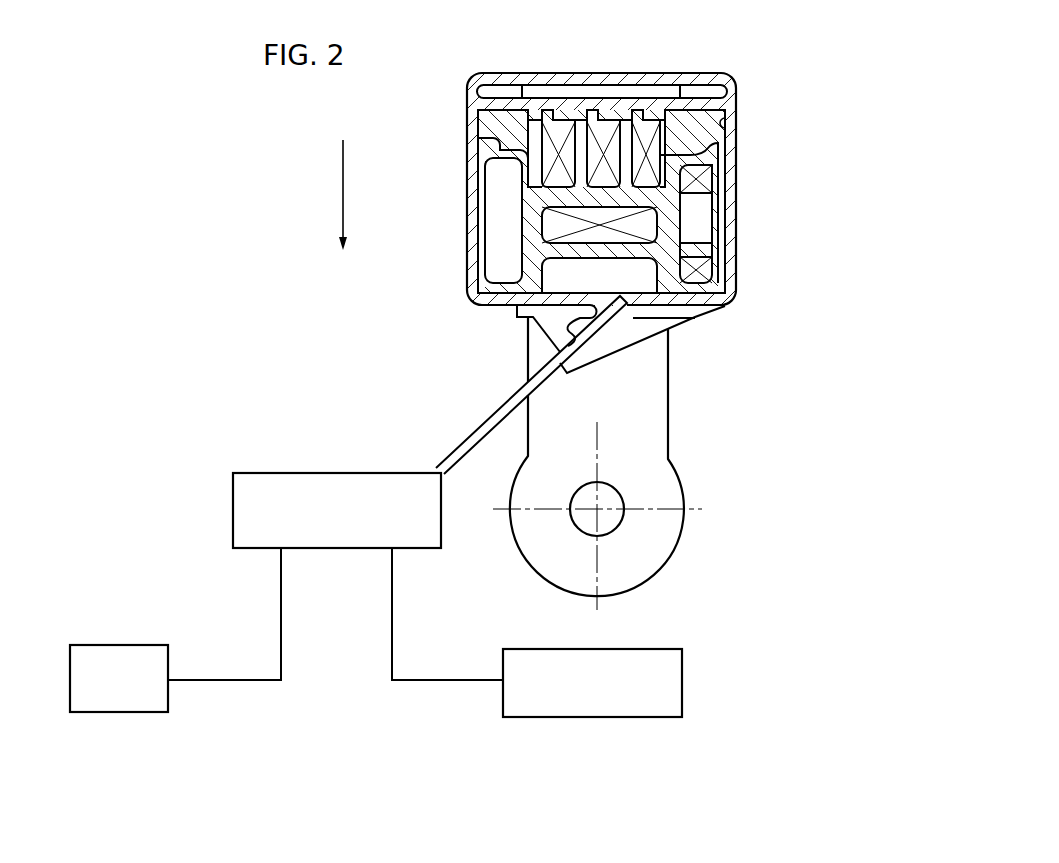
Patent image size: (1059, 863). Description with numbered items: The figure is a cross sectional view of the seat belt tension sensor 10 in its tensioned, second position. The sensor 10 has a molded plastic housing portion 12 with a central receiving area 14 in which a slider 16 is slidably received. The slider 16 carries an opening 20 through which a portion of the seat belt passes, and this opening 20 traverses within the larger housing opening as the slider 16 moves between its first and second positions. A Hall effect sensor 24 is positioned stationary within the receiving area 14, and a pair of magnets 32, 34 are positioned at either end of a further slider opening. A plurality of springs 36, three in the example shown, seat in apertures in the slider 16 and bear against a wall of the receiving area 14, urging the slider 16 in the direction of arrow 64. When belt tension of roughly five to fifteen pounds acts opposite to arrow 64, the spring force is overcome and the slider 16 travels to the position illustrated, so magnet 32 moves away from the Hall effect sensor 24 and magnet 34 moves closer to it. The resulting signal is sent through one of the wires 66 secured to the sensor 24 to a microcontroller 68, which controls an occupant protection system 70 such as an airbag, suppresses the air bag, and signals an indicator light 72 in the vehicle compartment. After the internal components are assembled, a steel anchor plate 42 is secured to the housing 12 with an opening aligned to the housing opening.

The seat belt tension sensor 10 is at (661, 46).
The housing portion 12 is at (738, 90).
The central receiving area 14 is at (725, 124).
The slider 16 is at (480, 158).
The opening 20 is at (560, 230).
The sensor 24 is at (722, 263).
The magnet 32 is at (700, 179).
The magnet 34 is at (713, 281).
The springs 36 is at (645, 157).
The anchor plate 42 is at (668, 420).
The arrow 64 is at (342, 182).
The wires 66 is at (483, 426).
The microcontroller 68 is at (305, 473).
The occupant protection system 70 is at (668, 649).
The indicator light 72 is at (108, 644).